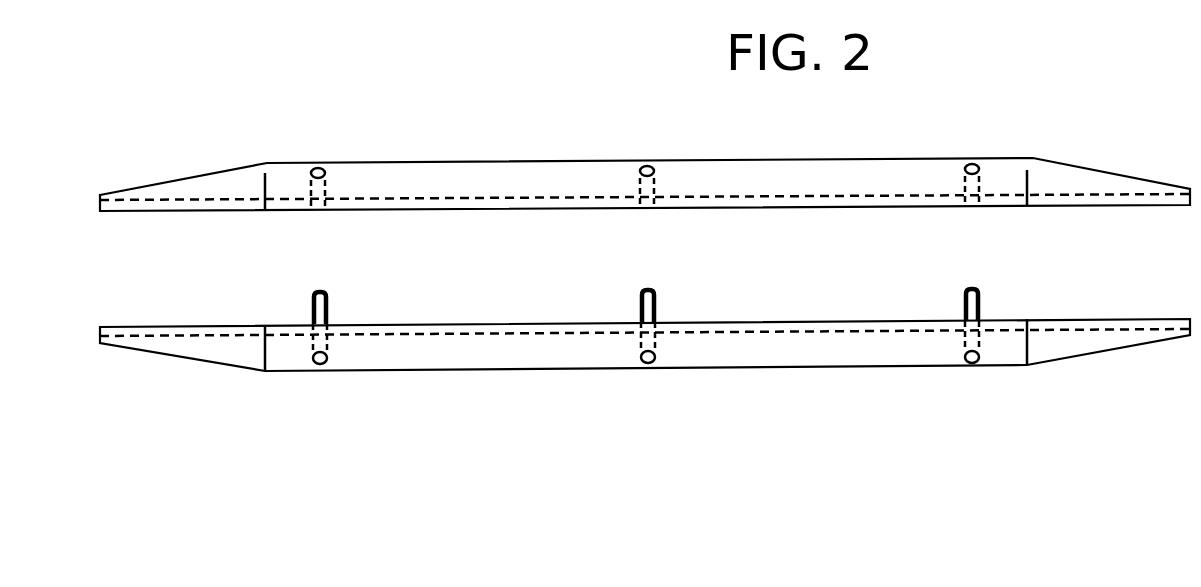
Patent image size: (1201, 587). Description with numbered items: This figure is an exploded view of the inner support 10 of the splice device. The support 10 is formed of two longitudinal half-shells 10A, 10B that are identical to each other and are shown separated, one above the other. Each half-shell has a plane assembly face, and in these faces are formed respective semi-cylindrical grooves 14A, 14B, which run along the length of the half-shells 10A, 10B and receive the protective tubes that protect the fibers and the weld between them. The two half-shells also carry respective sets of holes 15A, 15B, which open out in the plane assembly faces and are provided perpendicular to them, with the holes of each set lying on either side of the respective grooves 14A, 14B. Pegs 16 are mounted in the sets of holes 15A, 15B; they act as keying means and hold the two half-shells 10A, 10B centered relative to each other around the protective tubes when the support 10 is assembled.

The support 10 is at (366, 150).
The longitudinal half-shell 10A is at (508, 178).
The longitudinal half-shell 10B is at (510, 345).
The semi-cylindrical groove 14A is at (778, 196).
The semi-cylindrical groove 14B is at (775, 330).
The set of holes 15A is at (647, 165).
The set of holes 15B is at (650, 366).
The pegs 16 is at (330, 305).